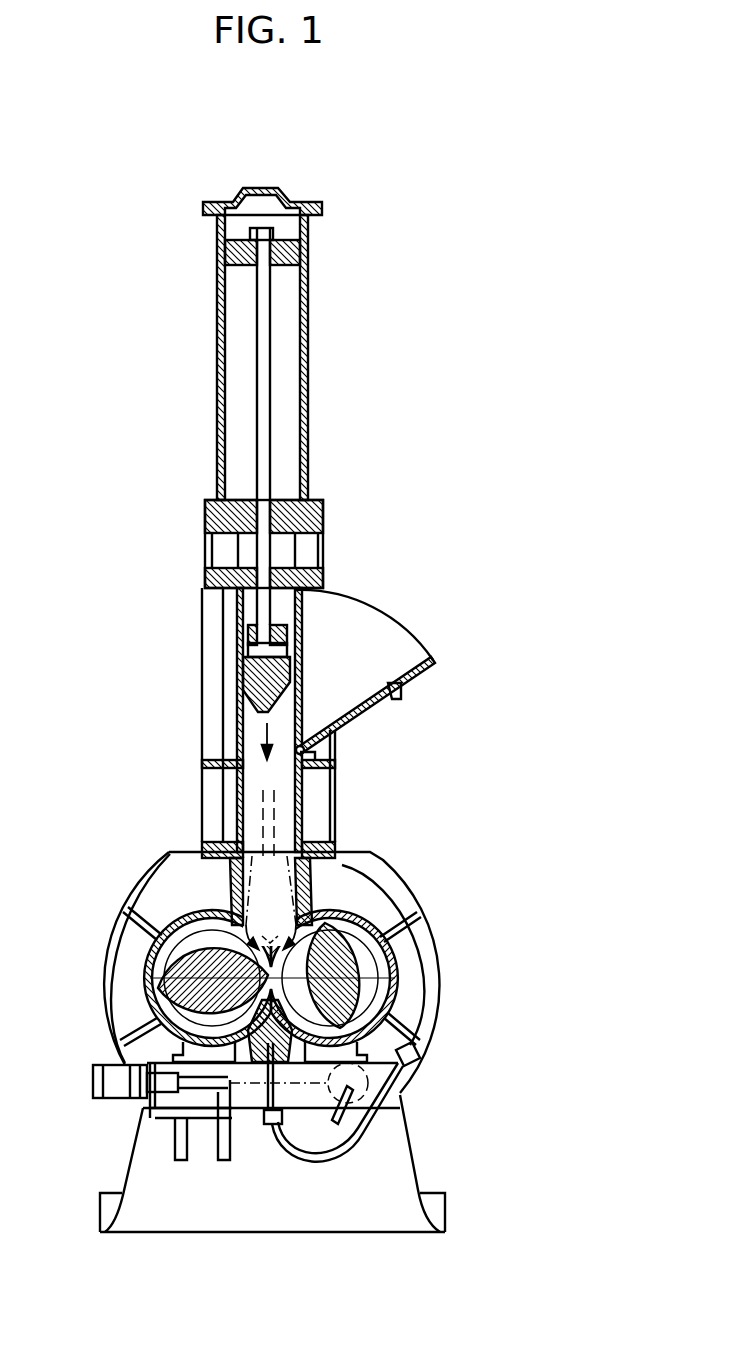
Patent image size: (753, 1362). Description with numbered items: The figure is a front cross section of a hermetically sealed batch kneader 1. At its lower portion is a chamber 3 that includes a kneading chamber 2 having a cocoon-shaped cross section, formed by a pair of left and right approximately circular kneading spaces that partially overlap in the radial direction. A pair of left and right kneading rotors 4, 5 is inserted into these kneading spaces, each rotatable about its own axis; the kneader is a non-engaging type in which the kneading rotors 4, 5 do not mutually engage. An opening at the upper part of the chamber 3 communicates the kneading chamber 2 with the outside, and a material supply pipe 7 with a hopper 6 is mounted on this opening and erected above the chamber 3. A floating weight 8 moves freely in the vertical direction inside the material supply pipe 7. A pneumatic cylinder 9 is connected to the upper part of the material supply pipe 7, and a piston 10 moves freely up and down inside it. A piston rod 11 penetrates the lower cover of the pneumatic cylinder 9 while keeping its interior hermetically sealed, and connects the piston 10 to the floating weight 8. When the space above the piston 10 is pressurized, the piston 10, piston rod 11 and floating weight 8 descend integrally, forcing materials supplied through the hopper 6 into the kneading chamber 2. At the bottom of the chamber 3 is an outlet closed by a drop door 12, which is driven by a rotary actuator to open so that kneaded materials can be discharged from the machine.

The batch kneader 1 is at (410, 151).
The kneading chamber 2 is at (182, 1037).
The chamber 3 is at (392, 946).
The kneading rotor 4 is at (345, 977).
The kneading rotor 5 is at (197, 960).
The hopper 6 is at (360, 618).
The material supply pipe 7 is at (303, 804).
The floating weight 8 is at (245, 681).
The pneumatic cylinder 9 is at (309, 299).
The piston 10 is at (308, 250).
The piston rod 11 is at (272, 388).
The drop door 12 is at (258, 1045).